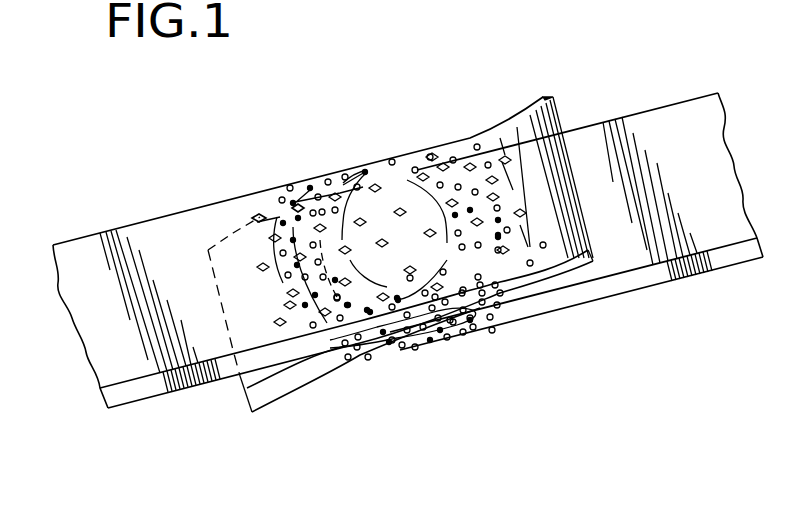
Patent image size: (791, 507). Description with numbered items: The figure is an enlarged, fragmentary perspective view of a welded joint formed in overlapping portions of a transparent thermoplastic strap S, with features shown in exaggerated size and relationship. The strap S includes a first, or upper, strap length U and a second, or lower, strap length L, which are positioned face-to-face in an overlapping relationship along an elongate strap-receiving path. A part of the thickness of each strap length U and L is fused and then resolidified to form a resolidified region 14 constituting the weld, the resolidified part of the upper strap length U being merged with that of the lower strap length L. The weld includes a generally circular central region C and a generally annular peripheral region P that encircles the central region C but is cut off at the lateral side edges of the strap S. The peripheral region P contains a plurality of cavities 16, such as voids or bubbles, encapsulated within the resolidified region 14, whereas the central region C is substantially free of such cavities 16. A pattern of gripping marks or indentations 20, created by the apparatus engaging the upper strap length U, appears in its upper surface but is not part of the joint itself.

The strap S is at (70, 232).
The upper strap length U is at (163, 248).
The lower strap length L is at (603, 290).
The peripheral region P is at (458, 149).
The central region C is at (345, 245).
The gripping marks or indentations 20 is at (298, 204).
The resolidified region 14 is at (333, 352).
The cavities 16 is at (370, 312).